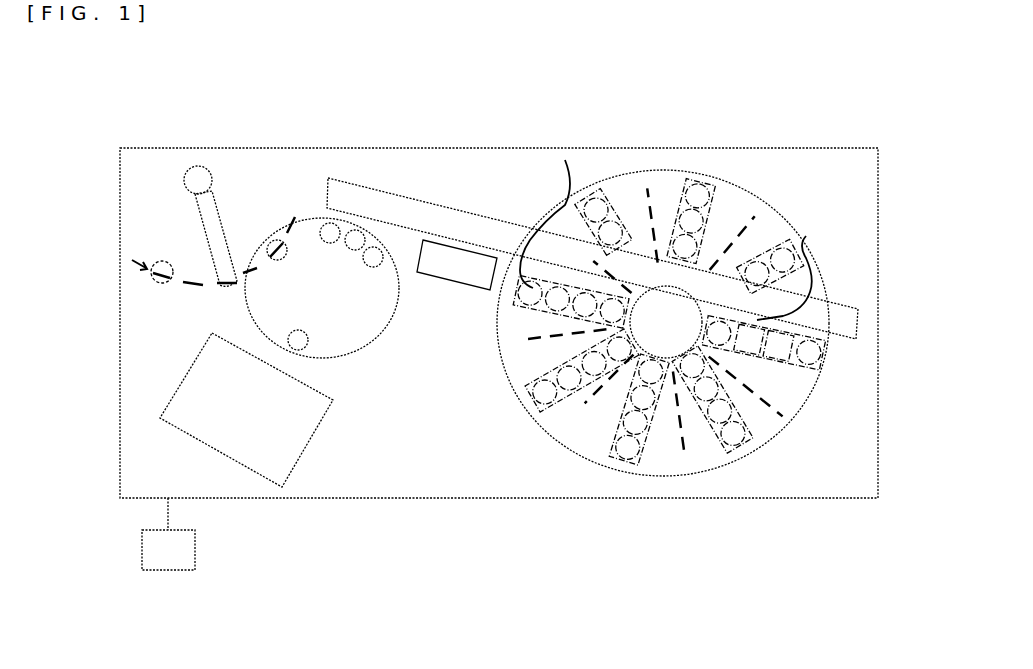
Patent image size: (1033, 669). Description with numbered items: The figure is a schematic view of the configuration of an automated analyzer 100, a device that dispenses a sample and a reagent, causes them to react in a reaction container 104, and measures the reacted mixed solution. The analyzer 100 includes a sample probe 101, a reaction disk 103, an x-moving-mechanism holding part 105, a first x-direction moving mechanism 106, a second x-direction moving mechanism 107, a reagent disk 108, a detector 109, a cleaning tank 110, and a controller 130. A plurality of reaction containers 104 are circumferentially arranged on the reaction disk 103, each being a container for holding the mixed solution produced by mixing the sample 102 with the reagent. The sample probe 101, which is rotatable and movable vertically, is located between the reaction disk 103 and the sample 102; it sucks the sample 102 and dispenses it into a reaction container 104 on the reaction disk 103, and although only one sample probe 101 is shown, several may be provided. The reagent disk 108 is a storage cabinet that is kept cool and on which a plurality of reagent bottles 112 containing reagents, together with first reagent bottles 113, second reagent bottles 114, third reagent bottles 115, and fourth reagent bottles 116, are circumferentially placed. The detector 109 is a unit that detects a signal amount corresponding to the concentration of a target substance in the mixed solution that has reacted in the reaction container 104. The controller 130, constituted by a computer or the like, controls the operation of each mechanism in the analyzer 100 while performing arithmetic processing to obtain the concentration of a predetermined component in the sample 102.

The automated analyzer 100 is at (818, 107).
The sample probe 101 is at (205, 228).
The sample 102 is at (150, 273).
The reaction disk 103 is at (350, 322).
The reaction container 104 is at (330, 230).
The x-moving-mechanism holding part 105 is at (366, 210).
The first x-direction moving mechanism 106 is at (806, 236).
The second x-direction moving mechanism 107 is at (790, 333).
The reagent disk 108 is at (667, 463).
The detector 109 is at (258, 438).
The cleaning tank 110 is at (447, 260).
The reagent bottles 112 is at (565, 160).
The first reagent bottles 113 is at (747, 360).
The second reagent bottles 114 is at (773, 357).
The third reagent bottles 115 is at (625, 440).
The fourth reagent bottles 116 is at (624, 425).
The controller 130 is at (148, 553).